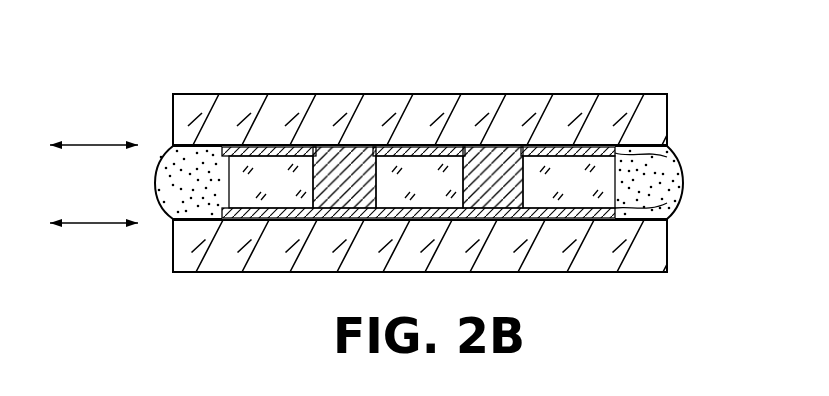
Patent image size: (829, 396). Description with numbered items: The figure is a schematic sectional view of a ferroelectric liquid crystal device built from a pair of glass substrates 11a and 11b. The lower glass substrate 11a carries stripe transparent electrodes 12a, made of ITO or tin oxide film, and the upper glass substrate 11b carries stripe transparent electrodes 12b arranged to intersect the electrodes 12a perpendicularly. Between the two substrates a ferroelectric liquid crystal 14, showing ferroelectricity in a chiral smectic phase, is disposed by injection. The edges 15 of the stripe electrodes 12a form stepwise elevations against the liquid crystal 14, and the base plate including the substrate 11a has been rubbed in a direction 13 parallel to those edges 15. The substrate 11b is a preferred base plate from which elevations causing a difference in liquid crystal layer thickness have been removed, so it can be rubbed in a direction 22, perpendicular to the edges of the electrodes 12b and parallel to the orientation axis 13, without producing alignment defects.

The glass substrate 11a is at (667, 238).
The glass substrate 11b is at (667, 118).
The transparent electrodes 12a is at (667, 205).
The transparent electrodes 12b is at (670, 157).
The rubbing direction 13 is at (92, 225).
The ferroelectric liquid crystal 14 is at (423, 172).
The edges of the stripe electrodes 15 is at (272, 208).
The rubbing direction 22 is at (95, 147).